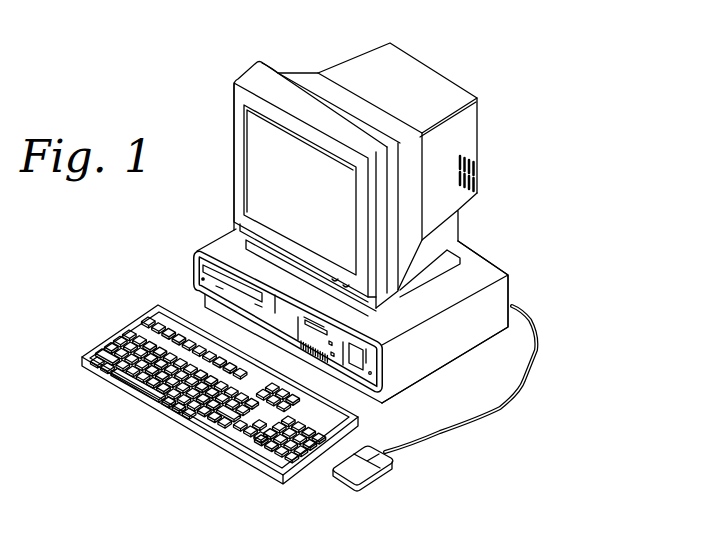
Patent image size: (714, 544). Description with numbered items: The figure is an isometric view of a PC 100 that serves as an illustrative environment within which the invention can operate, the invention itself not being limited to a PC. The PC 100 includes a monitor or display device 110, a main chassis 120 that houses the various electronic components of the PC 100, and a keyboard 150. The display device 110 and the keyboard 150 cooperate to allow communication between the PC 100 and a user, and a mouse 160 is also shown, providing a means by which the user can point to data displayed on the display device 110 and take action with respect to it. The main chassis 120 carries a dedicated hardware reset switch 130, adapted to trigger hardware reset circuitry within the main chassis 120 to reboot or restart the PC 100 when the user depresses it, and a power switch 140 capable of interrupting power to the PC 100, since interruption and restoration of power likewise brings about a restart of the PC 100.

The PC 100 is at (565, 133).
The display device 110 is at (353, 70).
The main chassis 120 is at (201, 246).
The hardware reset switch 130 is at (194, 264).
The power switch 140 is at (481, 253).
The keyboard 150 is at (116, 340).
The mouse 160 is at (379, 477).